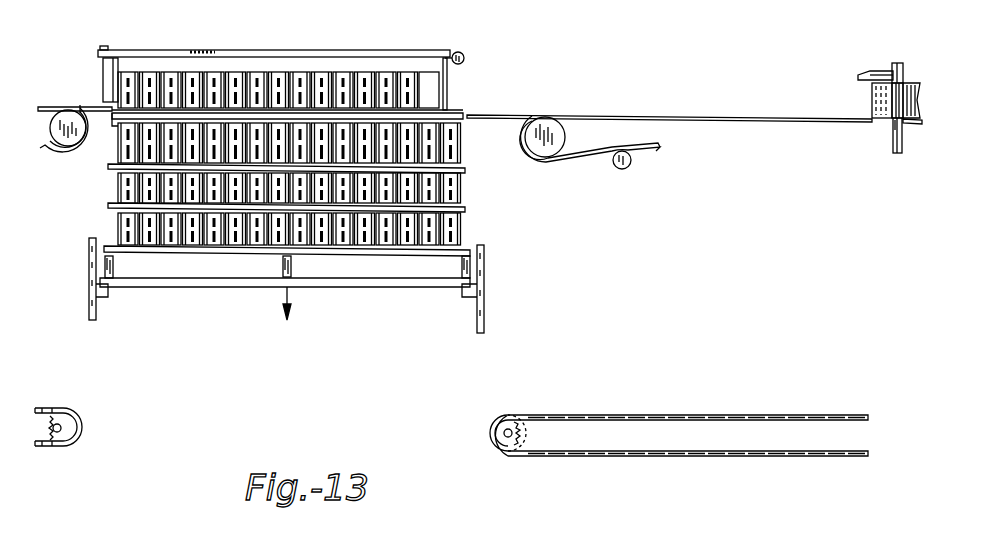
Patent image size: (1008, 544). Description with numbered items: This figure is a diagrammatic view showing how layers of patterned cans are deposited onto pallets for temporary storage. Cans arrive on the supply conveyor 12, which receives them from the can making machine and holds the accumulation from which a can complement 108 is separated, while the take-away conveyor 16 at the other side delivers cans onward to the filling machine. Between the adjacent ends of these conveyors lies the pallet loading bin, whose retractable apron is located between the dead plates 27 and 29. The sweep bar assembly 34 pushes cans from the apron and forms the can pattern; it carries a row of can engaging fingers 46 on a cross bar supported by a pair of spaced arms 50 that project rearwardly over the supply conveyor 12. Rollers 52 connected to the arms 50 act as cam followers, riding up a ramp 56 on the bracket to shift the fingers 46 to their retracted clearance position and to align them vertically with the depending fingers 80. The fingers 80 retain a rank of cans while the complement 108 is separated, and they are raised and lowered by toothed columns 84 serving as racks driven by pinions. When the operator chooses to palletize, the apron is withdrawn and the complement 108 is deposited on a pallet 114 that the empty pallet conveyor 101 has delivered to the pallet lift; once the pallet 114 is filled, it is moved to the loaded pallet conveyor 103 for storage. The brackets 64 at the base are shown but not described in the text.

The supply conveyor 12 is at (703, 116).
The take-away conveyor 16 is at (46, 108).
The dead plate 27 is at (104, 116).
The dead plate 29 is at (508, 116).
The sweep bar assembly 34 is at (92, 52).
The can engaging fingers 46 is at (449, 64).
The arms 50 is at (284, 51).
The rollers 52 is at (465, 57).
The ramp 56 is at (860, 74).
The bracket 64 is at (97, 308).
The depending fingers 80 is at (870, 97).
The columns 84 is at (893, 140).
The empty pallet conveyor 101 is at (686, 420).
The loaded pallet conveyor 103 is at (50, 404).
The can complement 108 is at (424, 88).
The pallet 114 is at (386, 285).